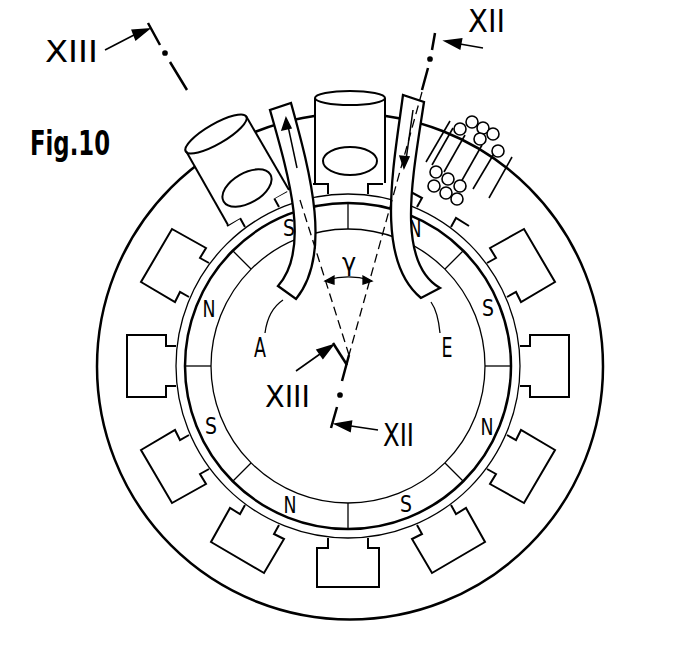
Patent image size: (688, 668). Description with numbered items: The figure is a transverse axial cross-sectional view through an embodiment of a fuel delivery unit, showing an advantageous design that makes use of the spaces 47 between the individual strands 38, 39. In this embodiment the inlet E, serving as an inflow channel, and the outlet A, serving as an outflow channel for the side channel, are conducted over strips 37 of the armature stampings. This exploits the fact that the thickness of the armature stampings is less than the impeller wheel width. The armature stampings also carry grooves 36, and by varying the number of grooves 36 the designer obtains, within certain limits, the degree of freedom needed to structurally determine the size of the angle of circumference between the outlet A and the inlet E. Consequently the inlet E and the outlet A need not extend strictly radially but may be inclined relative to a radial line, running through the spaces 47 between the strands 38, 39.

The grooves 36 is at (533, 255).
The strips 37 is at (502, 217).
The strand 38 is at (196, 143).
The strand 39 is at (362, 92).
The spaces 47 is at (258, 117).